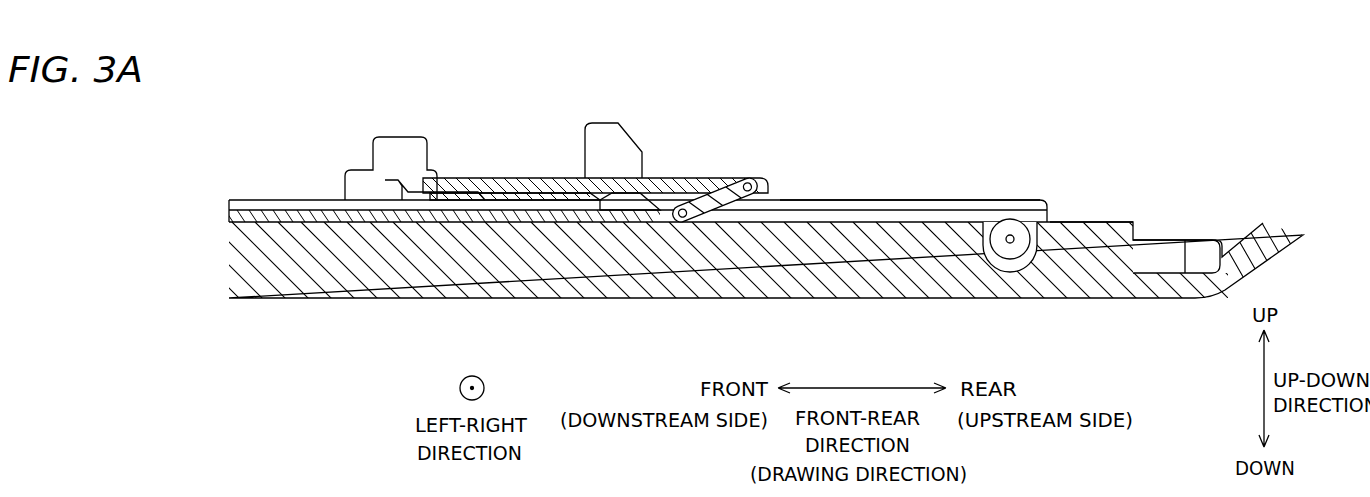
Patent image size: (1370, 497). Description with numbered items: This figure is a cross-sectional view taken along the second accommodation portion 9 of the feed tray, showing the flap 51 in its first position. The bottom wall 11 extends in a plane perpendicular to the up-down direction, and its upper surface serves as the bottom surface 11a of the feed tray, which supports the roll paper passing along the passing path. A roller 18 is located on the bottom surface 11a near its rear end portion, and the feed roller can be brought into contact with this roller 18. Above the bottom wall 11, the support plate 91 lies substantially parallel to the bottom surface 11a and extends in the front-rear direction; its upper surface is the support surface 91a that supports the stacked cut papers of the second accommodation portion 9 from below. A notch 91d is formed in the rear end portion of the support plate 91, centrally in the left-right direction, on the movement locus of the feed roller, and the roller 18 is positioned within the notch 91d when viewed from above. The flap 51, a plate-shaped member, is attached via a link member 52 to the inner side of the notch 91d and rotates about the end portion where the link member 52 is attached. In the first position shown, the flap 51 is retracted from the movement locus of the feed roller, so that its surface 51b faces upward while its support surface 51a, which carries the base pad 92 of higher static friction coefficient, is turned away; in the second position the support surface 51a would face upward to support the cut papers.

The second accommodation portion 9 is at (244, 116).
The bottom wall 11 is at (300, 285).
The bottom surface 11a is at (1072, 220).
The roller 18 is at (1010, 262).
The flap 51 is at (495, 195).
The support surface 51a is at (404, 200).
The surface 51b is at (470, 178).
The link member 52 is at (716, 180).
The support plate 91 is at (265, 202).
The support surface 91a is at (310, 200).
The notch 91d is at (906, 200).
The base pad 92 is at (472, 200).